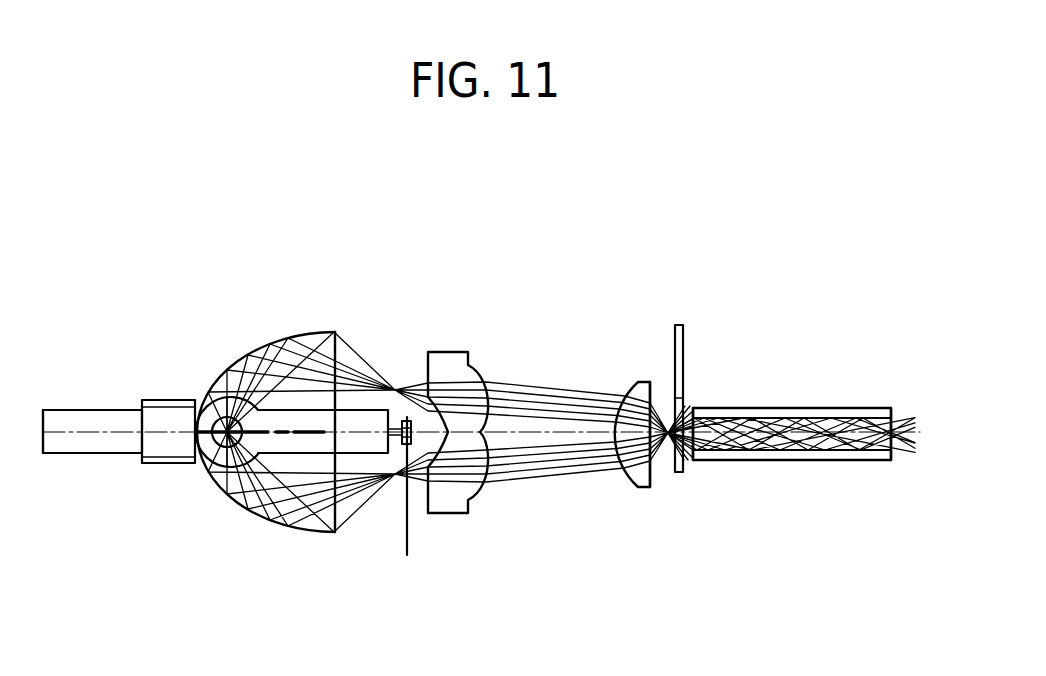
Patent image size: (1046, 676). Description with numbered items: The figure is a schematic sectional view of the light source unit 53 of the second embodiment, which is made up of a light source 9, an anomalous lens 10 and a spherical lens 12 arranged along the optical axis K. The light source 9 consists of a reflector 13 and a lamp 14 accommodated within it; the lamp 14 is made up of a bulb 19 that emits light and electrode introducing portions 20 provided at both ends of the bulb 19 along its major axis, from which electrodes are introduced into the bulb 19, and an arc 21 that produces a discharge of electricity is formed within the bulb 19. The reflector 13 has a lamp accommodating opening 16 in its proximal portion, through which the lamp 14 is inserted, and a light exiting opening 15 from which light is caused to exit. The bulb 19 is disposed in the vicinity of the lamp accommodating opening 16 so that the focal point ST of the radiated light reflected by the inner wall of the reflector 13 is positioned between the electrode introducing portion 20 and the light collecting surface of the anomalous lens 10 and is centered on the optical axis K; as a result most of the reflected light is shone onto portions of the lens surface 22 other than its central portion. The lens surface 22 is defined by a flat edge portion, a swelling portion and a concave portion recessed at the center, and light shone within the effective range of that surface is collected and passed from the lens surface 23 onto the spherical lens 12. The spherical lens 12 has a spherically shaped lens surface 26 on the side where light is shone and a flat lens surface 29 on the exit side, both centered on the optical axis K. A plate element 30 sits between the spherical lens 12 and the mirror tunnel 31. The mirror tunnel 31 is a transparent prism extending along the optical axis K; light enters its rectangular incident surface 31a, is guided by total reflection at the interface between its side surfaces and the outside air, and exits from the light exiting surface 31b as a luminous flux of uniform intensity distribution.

The light source 9 is at (216, 305).
The light source unit 53 is at (466, 254).
The electrode introducing portion 20 is at (85, 417).
The lamp accommodating opening 16 is at (135, 457).
The arc 21 is at (187, 452).
The lamp 14 is at (223, 467).
The bulb 19 is at (218, 465).
The reflector 13 is at (305, 534).
The light exiting opening 15 is at (338, 534).
The lens surface 22 is at (411, 500).
The focal point ST is at (400, 392).
The optical axis K is at (787, 392).
The anomalous lens 10 is at (477, 449).
The lens surface 23 is at (470, 356).
The lens surface 29 is at (618, 427).
The lens surface 26 is at (628, 484).
The spherical lens 12 is at (643, 488).
The filter 30 is at (686, 336).
The mirror tunnel 31 is at (792, 436).
The incident surface 31a is at (693, 462).
The light exiting surface 31b is at (890, 462).